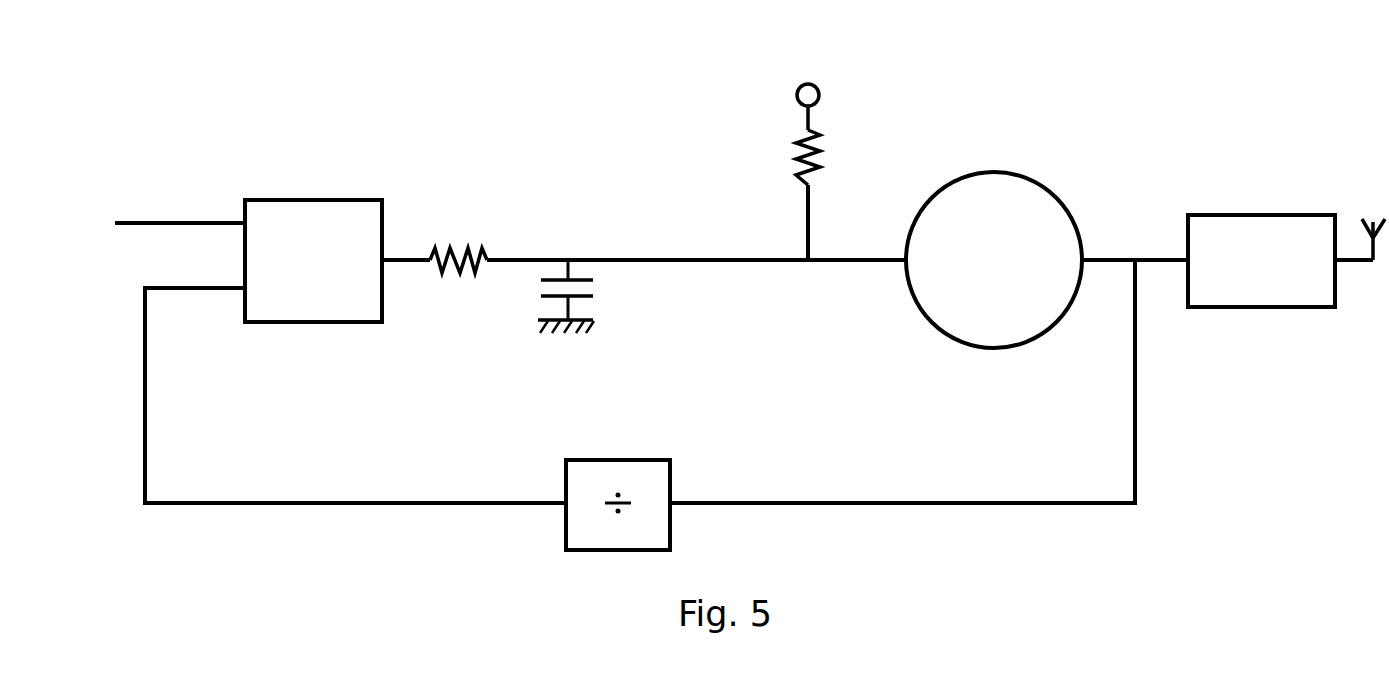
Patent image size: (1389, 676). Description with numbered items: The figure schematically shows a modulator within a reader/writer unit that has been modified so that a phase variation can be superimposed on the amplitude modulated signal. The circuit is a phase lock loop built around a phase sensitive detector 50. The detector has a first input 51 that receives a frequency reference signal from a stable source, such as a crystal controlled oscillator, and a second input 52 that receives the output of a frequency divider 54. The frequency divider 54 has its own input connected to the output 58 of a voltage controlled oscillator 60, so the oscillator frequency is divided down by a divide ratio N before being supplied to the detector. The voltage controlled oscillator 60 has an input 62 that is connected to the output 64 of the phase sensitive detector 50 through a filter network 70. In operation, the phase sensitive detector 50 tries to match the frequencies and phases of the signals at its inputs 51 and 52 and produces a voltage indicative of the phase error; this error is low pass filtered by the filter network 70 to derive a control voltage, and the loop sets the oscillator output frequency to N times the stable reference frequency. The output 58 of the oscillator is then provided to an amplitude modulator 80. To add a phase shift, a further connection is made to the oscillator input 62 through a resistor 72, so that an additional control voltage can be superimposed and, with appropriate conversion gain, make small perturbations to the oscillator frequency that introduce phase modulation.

The phase sensitive detector 50 is at (312, 200).
The first input 51 is at (177, 222).
The second input 52 is at (185, 291).
The output 64 is at (384, 242).
The filter network 70 is at (428, 243).
The resistor 72 is at (793, 157).
The input 62 is at (904, 266).
The voltage controlled oscillator 60 is at (993, 172).
The output 58 is at (1081, 244).
The amplitude modulator 80 is at (1262, 215).
The frequency divider 54 is at (618, 460).